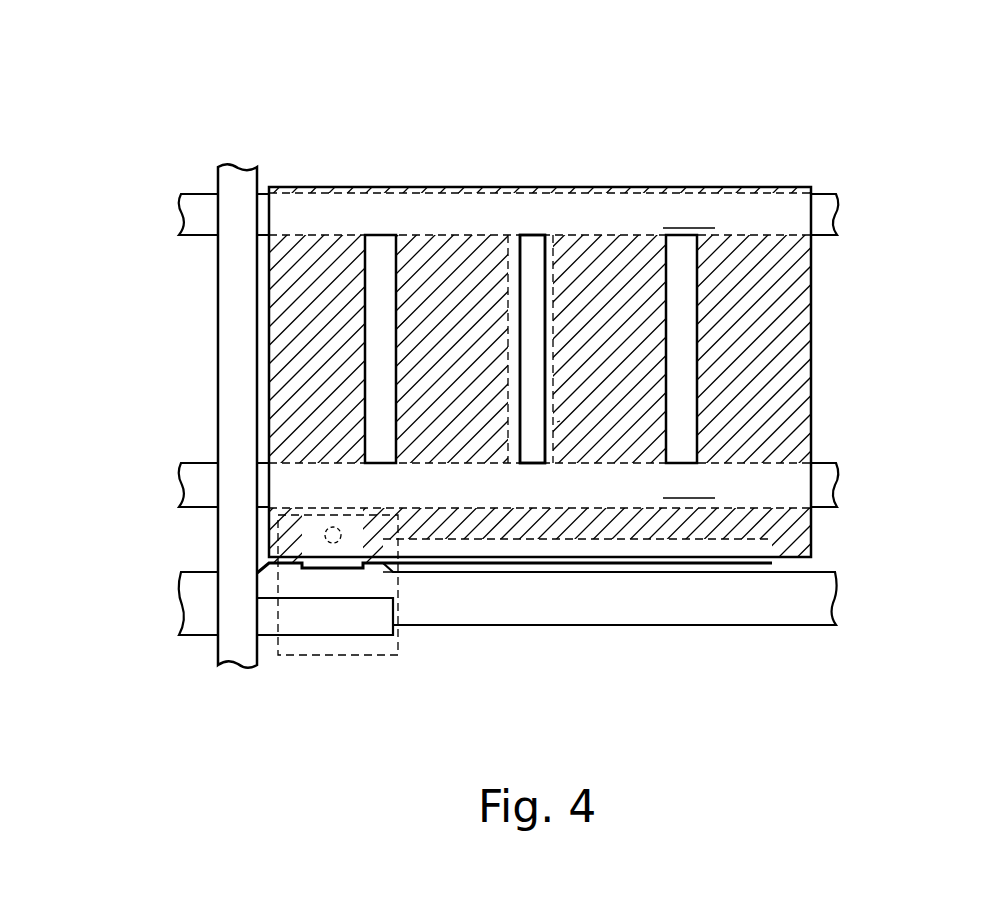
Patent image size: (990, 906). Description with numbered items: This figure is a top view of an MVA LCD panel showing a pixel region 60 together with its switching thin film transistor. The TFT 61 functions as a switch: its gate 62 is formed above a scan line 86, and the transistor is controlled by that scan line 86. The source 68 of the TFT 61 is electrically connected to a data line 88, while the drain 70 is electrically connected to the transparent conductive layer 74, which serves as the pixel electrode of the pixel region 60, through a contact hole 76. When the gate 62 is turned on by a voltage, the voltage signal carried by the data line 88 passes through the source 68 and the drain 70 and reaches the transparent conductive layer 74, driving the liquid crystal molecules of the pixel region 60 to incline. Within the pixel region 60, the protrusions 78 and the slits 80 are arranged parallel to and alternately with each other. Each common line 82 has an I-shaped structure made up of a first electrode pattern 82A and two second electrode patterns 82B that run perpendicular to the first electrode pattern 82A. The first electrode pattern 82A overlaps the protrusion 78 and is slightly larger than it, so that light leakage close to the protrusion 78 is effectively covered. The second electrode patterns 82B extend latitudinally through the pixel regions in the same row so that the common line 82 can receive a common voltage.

The pixel region 60 is at (718, 114).
The TFT 61 is at (393, 675).
The gate 62 is at (313, 583).
The source 68 is at (328, 630).
The drain 70 is at (317, 550).
The transparent conductive layer 74 is at (643, 298).
The contact hole 76 is at (322, 530).
The protrusion 78 is at (530, 247).
The slit 80 is at (377, 352).
The common line 82 is at (860, 215).
The first electrode pattern 82A is at (557, 422).
The second electrode pattern 82B is at (692, 347).
The scan line 86 is at (641, 627).
The data line 88 is at (217, 303).